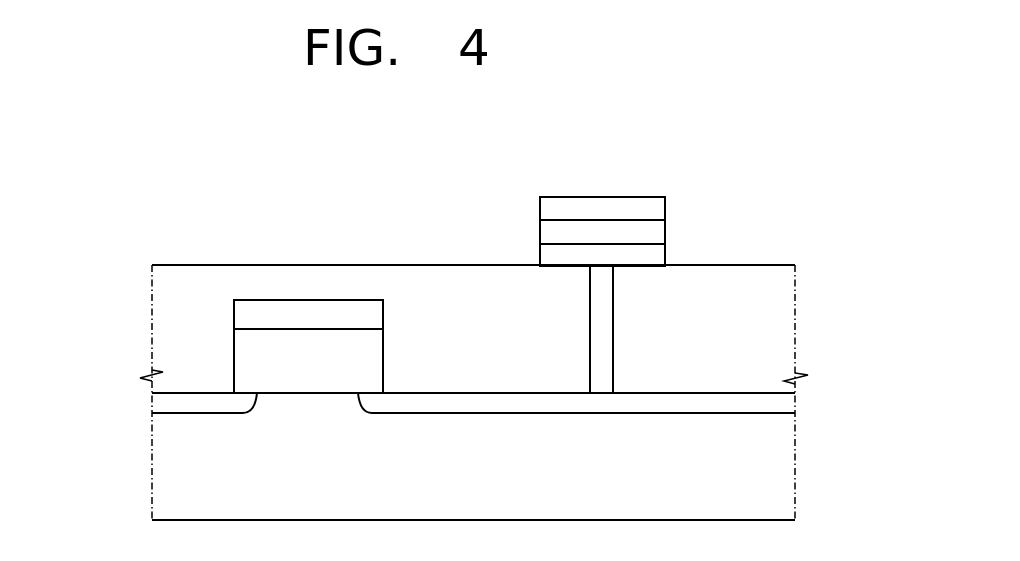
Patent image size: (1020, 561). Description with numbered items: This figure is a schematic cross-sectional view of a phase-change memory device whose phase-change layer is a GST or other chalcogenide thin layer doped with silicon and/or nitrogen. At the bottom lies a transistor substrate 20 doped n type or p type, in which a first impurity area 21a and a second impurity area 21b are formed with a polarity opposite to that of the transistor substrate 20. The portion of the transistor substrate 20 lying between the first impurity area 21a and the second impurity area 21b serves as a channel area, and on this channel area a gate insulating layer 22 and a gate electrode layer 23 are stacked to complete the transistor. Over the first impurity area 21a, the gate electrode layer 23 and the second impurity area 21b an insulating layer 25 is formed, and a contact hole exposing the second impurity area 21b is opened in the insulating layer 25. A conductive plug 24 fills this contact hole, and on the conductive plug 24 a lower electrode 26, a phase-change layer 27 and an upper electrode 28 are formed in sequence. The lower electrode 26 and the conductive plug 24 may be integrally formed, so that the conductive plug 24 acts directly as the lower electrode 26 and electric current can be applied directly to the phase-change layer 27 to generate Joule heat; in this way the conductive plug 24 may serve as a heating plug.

The transistor substrate 20 is at (165, 465).
The first impurity area 21a is at (165, 404).
The second impurity area 21b is at (780, 407).
The gate insulating layer 22 is at (248, 353).
The gate electrode layer 23 is at (248, 315).
The conductive plug 24 is at (603, 302).
The insulating layer 25 is at (780, 345).
The lower electrode 26 is at (665, 253).
The phase-change layer 27 is at (665, 236).
The upper electrode 28 is at (665, 205).